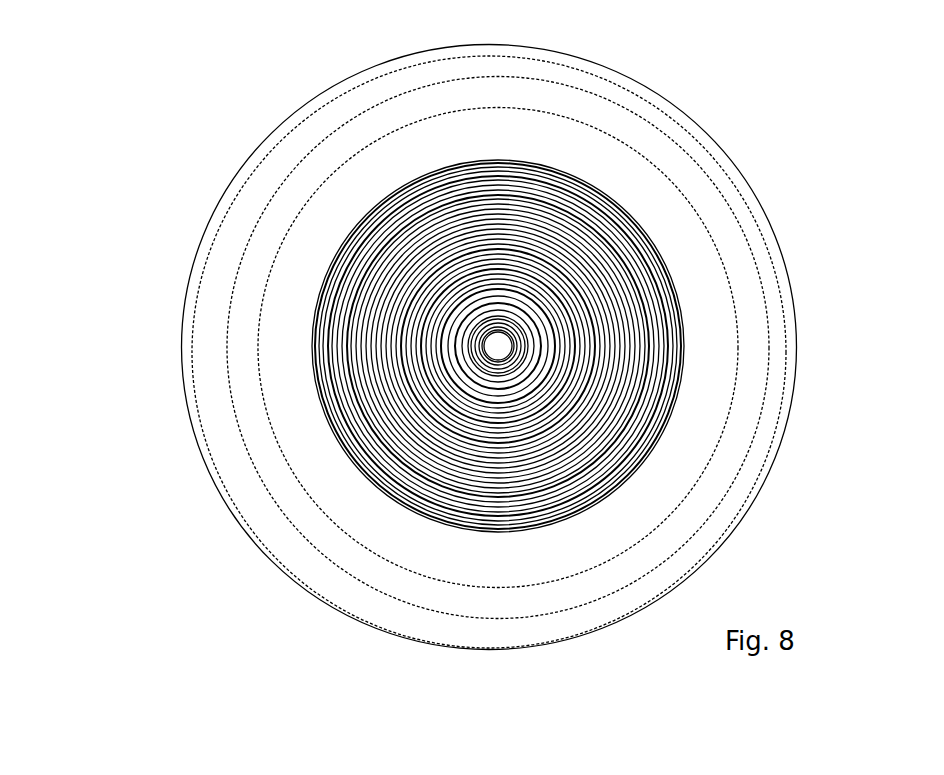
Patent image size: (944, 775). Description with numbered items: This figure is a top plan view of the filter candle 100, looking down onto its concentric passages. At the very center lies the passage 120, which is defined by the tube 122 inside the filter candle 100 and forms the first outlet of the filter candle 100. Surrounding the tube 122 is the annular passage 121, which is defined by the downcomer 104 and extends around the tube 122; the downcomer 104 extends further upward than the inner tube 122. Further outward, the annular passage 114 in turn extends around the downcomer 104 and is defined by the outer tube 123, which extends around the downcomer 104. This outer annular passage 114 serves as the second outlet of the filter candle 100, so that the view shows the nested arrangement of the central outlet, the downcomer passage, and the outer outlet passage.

The filter candle 100 is at (205, 609).
The downcomer 104 is at (503, 343).
The annular passage 114 is at (435, 345).
The passage 120 is at (505, 340).
The annular passage 121 is at (497, 337).
The tube 122 is at (527, 342).
The outer tube 123 is at (440, 293).